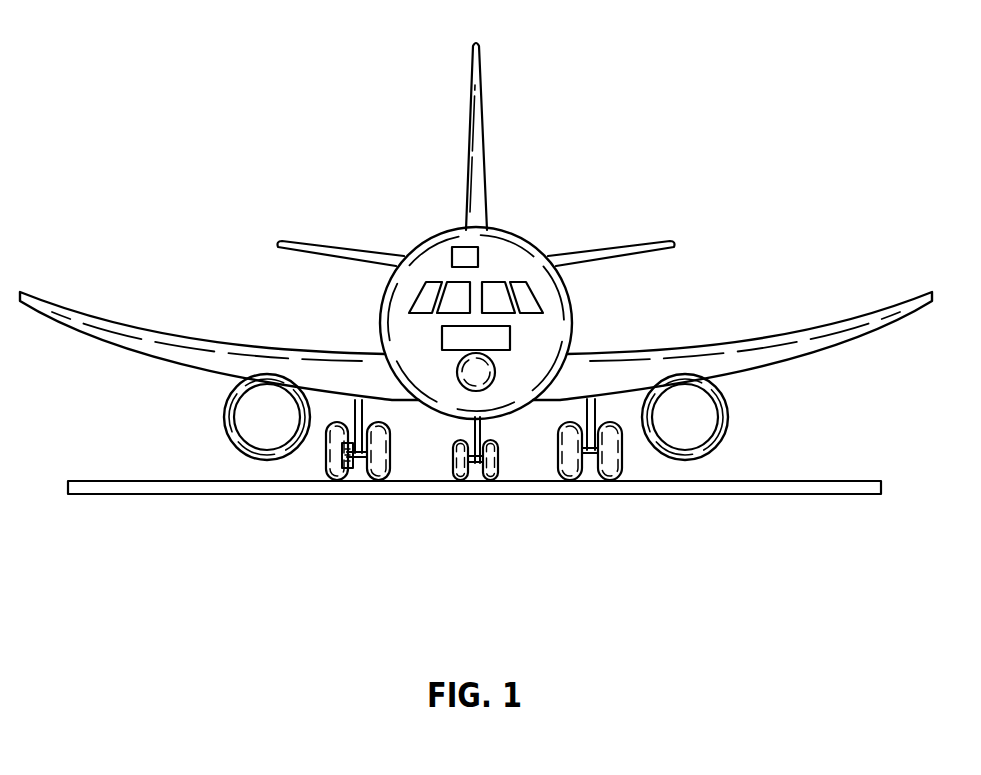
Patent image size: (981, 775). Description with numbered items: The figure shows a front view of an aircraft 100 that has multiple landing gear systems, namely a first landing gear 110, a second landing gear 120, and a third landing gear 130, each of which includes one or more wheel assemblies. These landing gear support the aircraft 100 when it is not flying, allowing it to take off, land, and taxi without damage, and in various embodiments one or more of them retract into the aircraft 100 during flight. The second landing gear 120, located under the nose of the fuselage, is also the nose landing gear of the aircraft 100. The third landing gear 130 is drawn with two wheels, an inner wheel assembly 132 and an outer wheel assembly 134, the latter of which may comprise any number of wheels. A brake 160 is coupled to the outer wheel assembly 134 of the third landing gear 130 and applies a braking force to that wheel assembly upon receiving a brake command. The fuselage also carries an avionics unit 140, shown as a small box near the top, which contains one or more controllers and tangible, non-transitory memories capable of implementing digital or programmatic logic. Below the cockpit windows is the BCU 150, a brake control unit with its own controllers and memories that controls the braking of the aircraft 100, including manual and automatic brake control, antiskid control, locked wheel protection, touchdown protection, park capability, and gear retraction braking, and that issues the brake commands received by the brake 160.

The aircraft 100 is at (322, 92).
The first landing gear 110 is at (625, 462).
The second landing gear 120 is at (498, 468).
The third landing gear 130 is at (349, 512).
The inner wheel assembly 132 is at (383, 480).
The outer wheel assembly 134 is at (345, 477).
The avionics unit 140 is at (480, 258).
The BCU 150 is at (512, 339).
The brake 160 is at (343, 473).